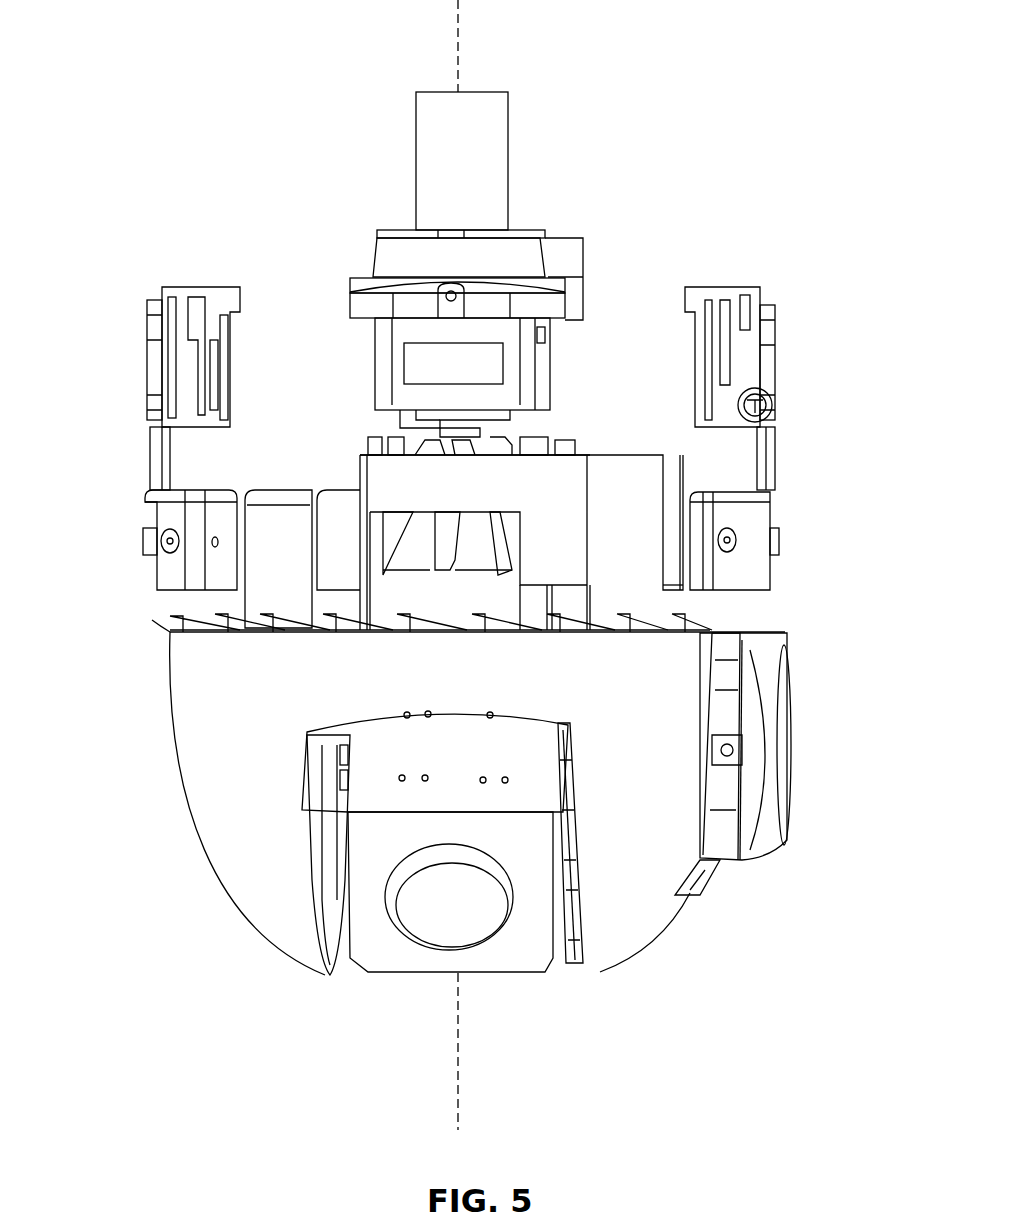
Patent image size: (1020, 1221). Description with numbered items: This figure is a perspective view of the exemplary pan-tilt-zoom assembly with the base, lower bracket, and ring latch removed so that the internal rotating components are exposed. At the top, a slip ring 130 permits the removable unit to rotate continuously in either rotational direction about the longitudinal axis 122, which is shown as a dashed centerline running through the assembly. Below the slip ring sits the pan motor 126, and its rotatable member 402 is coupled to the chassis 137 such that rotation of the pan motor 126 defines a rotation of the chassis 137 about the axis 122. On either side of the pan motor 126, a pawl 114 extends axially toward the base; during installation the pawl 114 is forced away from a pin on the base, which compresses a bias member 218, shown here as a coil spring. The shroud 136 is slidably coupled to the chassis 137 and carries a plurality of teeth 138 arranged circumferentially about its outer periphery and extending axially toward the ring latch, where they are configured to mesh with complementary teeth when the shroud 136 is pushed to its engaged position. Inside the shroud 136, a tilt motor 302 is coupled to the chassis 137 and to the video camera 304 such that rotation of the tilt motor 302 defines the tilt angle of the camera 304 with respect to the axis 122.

The pawl 114 is at (148, 384).
The longitudinal axis 122 is at (460, 1083).
The pan motor 126 is at (550, 343).
The slip ring 130 is at (487, 159).
The shroud 136 is at (185, 800).
The chassis 137 is at (626, 491).
The teeth 138 is at (786, 605).
The bias member 218 is at (777, 399).
The tilt motor 302 is at (720, 860).
The video camera 304 is at (495, 965).
The rotatable member 402 is at (515, 432).